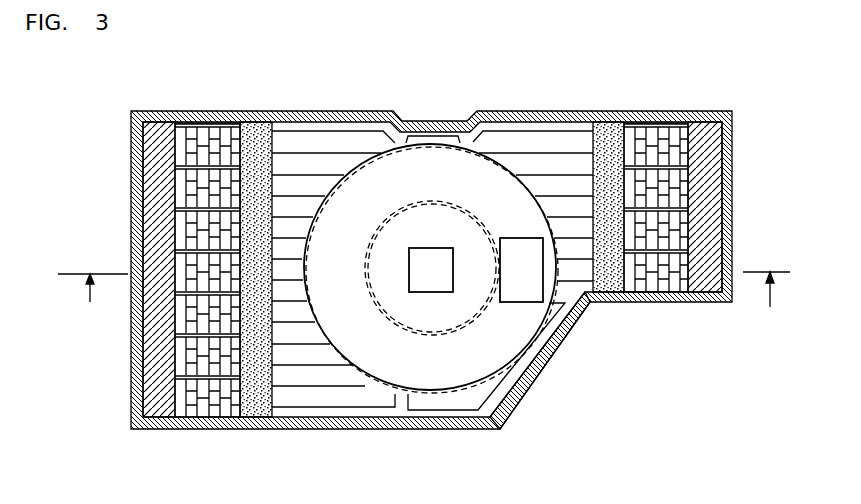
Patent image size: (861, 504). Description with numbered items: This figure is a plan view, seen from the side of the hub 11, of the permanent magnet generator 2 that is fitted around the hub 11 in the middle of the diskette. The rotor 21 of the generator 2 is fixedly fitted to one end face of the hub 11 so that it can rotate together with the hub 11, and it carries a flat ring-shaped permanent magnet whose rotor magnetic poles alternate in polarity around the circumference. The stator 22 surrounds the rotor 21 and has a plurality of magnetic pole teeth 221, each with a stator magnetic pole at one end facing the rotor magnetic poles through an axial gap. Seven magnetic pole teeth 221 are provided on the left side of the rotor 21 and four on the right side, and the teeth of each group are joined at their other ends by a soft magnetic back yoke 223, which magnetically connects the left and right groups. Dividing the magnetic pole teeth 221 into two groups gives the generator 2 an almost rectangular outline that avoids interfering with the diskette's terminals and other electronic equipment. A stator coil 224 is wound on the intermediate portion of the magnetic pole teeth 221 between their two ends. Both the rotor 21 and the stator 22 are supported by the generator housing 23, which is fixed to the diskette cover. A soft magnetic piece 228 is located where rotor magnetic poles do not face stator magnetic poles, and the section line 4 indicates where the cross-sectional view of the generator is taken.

The permanent magnet generator 2 is at (780, 122).
The section line of the cross-sectional view 4 is at (424, 298).
The hub 11 is at (473, 181).
The rotor 21 is at (431, 264).
The stator 22 is at (578, 325).
The generator housing 23 is at (350, 430).
The magnetic pole teeth 221 is at (305, 195).
The soft magnetic back yoke 223 is at (150, 377).
The stator coil 224 is at (213, 393).
The soft magnetic piece 228 is at (483, 428).